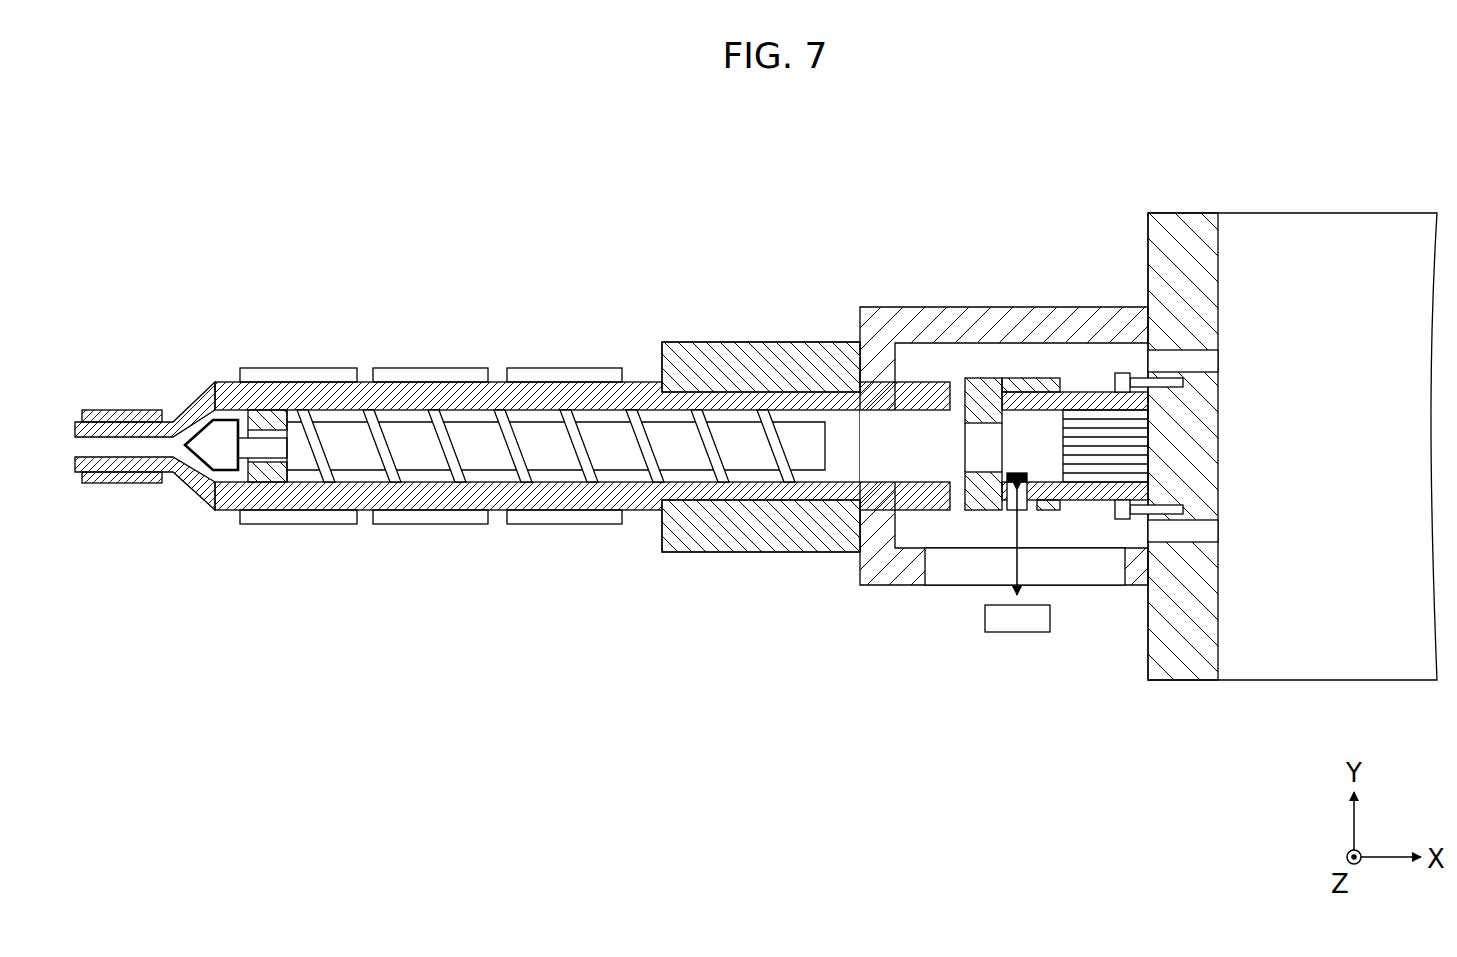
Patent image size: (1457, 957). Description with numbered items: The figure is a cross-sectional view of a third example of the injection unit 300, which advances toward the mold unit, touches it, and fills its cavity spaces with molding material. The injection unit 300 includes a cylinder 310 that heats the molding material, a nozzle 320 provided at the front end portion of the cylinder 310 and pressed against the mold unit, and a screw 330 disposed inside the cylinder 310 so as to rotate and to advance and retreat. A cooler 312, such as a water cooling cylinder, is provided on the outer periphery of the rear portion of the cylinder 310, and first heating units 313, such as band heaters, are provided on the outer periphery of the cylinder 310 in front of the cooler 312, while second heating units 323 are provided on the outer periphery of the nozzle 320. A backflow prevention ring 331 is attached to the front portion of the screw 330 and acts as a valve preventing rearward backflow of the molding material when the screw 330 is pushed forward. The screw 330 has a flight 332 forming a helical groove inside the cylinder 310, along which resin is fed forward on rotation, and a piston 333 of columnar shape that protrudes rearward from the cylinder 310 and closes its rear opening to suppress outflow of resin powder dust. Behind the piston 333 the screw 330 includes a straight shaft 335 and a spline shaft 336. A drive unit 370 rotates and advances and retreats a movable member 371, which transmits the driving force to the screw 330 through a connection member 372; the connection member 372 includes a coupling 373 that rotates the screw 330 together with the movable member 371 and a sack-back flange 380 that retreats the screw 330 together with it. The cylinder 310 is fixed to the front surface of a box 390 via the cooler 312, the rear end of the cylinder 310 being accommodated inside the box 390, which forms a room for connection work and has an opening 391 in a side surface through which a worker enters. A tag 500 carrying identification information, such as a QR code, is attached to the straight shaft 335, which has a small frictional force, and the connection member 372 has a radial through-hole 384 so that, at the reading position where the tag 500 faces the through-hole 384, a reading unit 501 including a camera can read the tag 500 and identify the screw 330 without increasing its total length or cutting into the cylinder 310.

The injection unit 300 is at (147, 232).
The cylinder 310 is at (325, 388).
The cooler 312 is at (718, 352).
The first heating units 313 is at (331, 524).
The nozzle 320 is at (120, 428).
The second heating units 323 is at (120, 478).
The screw 330 is at (405, 428).
The backflow prevention ring 331 is at (262, 474).
The flight 332 is at (498, 414).
The piston 333 is at (845, 420).
The straight shaft 335 is at (1008, 446).
The spline shaft 336 is at (1085, 472).
The drive unit 370 is at (1335, 222).
The movable member 371 is at (1205, 440).
The connection member 372 is at (1108, 246).
The coupling 373 is at (1084, 400).
The sack-back flange 380 is at (1018, 384).
The through-hole 384 is at (1013, 508).
The box 390 is at (888, 587).
The opening 391 is at (948, 587).
The tag 500 is at (1010, 478).
The reading unit 501 is at (1017, 634).